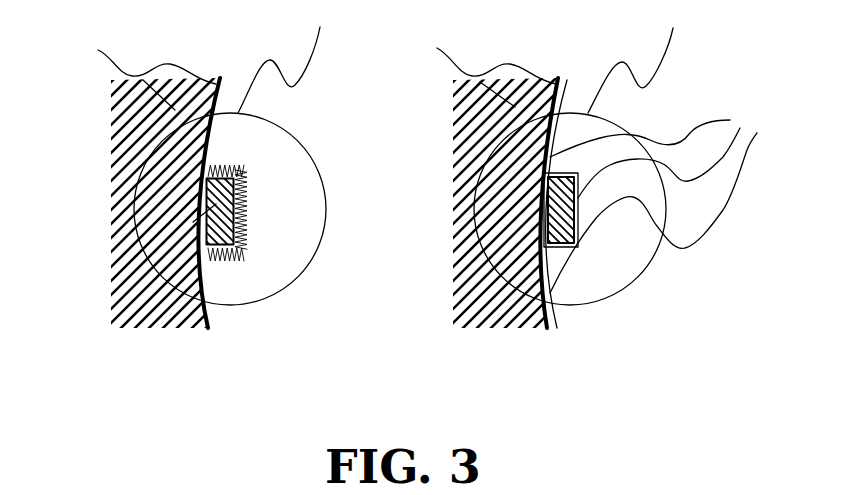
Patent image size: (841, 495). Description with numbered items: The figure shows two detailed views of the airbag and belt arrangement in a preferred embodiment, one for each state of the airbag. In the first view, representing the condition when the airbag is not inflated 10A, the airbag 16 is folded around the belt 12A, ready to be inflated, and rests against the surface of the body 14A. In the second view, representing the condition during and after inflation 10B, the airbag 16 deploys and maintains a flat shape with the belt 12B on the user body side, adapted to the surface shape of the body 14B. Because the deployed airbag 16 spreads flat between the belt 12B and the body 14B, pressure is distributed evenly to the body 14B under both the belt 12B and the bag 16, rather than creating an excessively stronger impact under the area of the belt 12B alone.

The airbag not inflated portion 10A is at (287, 60).
The during and after inflation portion 10B is at (642, 60).
The belt 12A is at (137, 223).
The belt 12B is at (476, 228).
The body 14A is at (127, 93).
The body 14B is at (465, 92).
The airbag 16 is at (245, 172).